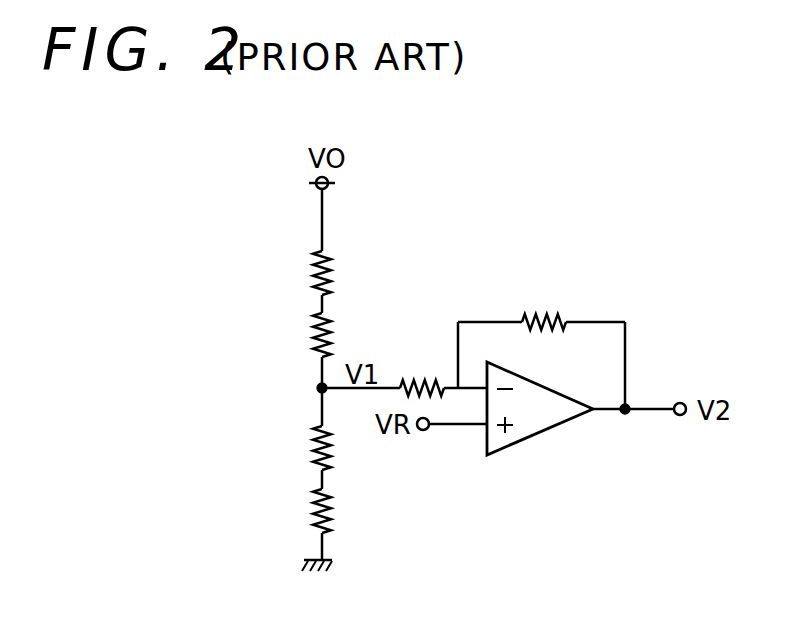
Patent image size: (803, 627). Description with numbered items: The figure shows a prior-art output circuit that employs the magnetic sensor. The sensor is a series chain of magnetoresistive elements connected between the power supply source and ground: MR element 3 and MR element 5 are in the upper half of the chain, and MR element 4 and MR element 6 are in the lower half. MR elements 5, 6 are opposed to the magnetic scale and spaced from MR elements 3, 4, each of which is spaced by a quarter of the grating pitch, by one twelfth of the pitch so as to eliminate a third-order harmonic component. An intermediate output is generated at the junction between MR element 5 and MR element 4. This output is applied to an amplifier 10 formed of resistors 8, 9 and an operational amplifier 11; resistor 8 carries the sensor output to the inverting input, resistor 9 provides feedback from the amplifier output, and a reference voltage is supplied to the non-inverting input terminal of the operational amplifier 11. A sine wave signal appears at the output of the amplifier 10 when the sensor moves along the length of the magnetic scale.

The MR element 3 is at (330, 266).
The MR element 5 is at (330, 333).
The MR element 4 is at (330, 452).
The MR element 6 is at (330, 516).
The resistor 8 is at (428, 384).
The resistor 9 is at (544, 310).
The amplifier 10 is at (561, 436).
The operational amplifier 11 is at (548, 440).